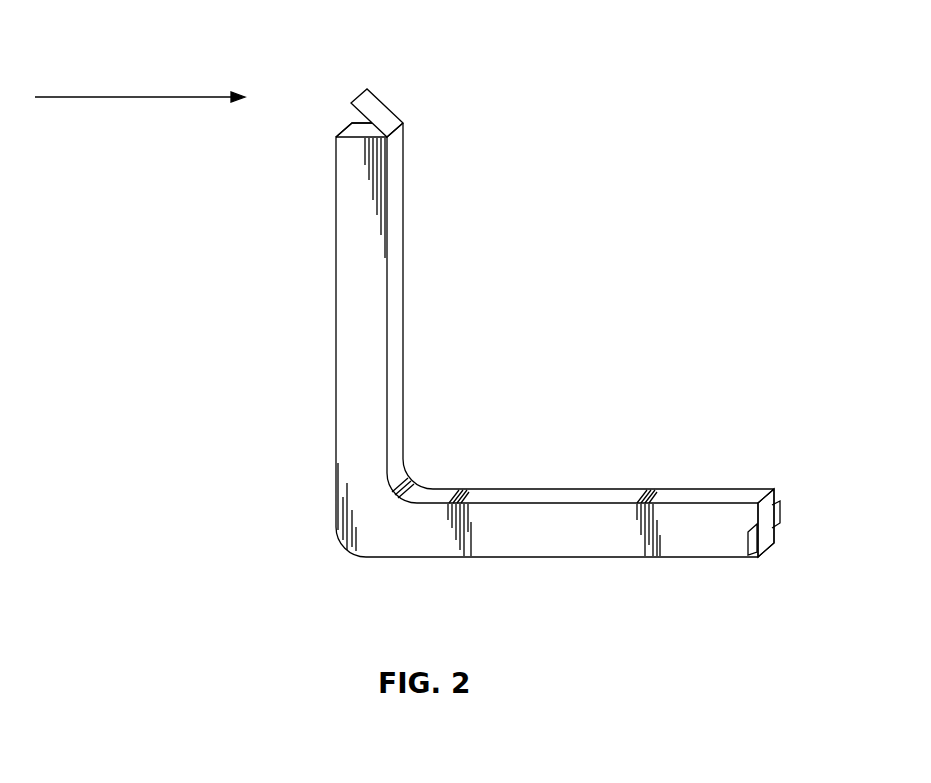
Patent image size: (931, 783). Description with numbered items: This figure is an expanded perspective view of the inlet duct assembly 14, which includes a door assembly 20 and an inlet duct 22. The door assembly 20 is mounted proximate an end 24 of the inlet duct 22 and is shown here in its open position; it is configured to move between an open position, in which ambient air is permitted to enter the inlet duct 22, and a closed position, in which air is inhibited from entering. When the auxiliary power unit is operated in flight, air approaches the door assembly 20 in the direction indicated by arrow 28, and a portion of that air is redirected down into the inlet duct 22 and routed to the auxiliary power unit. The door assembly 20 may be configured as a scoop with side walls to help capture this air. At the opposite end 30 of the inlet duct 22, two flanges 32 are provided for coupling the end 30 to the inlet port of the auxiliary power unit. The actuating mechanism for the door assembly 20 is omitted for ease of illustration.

The inlet duct assembly 14 is at (440, 557).
The door assembly 20 is at (359, 94).
The inlet duct 22 is at (336, 373).
The end of inlet duct 24 is at (350, 133).
The arrow 28 is at (140, 97).
The end of inlet duct 30 is at (760, 501).
The flanges 32 is at (748, 540).